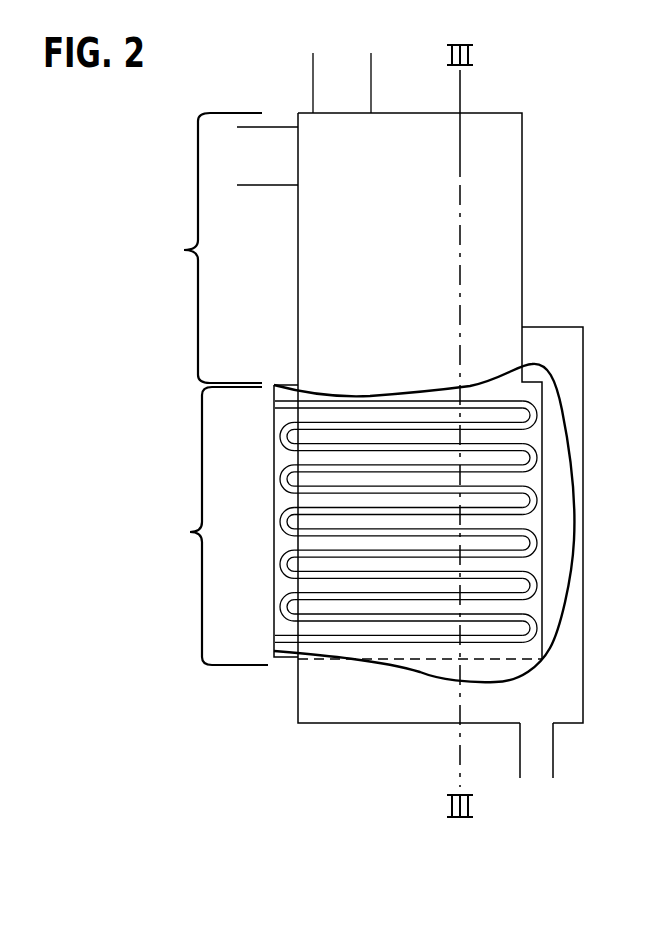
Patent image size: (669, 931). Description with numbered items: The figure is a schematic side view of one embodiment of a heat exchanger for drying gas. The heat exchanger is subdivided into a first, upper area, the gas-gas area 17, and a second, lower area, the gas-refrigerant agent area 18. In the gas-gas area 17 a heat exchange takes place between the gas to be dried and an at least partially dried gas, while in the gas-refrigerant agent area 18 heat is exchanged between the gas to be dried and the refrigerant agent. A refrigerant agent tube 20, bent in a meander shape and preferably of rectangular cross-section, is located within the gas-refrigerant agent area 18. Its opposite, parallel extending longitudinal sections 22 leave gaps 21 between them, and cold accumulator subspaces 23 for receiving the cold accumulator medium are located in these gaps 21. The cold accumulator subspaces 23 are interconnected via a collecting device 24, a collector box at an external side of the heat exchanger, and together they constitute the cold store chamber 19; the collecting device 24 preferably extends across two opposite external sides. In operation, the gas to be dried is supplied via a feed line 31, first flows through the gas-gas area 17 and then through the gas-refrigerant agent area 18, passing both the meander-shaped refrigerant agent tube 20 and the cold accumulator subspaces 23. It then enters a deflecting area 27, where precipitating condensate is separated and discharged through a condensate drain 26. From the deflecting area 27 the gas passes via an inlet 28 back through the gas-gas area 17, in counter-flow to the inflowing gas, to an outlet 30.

The gas-gas area 17 is at (347, 386).
The gas-refrigerant agent area 18 is at (338, 554).
The cold store chamber 19 is at (316, 501).
The refrigerant agent tube 20 is at (281, 431).
The gaps 21 is at (420, 737).
The longitudinal sections 22 is at (347, 620).
The cold accumulator subspaces 23 is at (397, 605).
The collecting device 24 is at (281, 461).
The condensate drain 26 is at (535, 760).
The deflecting area 27 is at (557, 703).
The inlet 28 is at (497, 353).
The outlet 30 is at (274, 171).
The feed line 31 is at (355, 98).